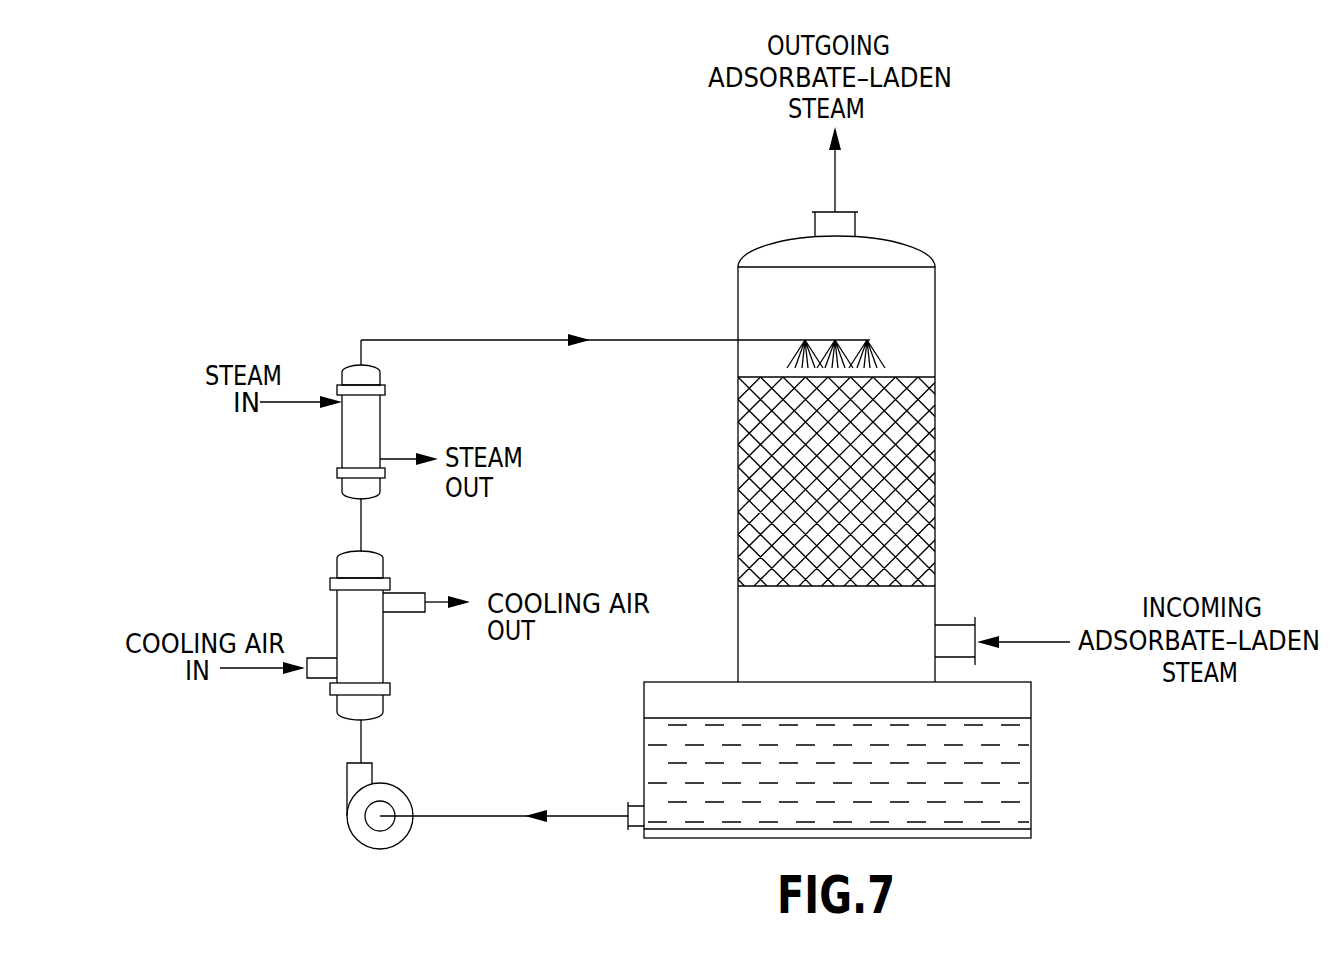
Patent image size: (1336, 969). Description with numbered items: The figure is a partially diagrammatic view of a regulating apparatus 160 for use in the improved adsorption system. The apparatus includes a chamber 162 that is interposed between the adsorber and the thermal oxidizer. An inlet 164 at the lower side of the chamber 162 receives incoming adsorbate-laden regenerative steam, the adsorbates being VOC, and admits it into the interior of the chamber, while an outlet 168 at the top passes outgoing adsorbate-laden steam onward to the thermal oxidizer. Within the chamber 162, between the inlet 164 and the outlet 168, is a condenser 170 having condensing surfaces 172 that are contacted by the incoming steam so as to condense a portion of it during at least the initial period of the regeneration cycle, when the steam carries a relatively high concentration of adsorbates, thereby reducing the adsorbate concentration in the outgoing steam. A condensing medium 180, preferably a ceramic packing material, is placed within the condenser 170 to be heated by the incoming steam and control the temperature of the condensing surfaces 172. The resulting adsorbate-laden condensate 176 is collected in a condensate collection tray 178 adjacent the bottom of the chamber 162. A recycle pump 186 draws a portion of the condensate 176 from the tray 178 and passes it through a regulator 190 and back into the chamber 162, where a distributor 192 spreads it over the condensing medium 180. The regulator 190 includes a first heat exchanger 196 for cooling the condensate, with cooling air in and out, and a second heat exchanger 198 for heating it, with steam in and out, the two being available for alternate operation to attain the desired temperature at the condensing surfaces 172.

The regulating apparatus 160 is at (935, 258).
The chamber 162 is at (938, 318).
The inlet 164 is at (977, 640).
The outlet 168 is at (838, 205).
The condenser 170 is at (737, 394).
The condensing surfaces 172 is at (752, 500).
The adsorbate-laden condensate 176 is at (843, 725).
The condensate collection tray 178 is at (703, 830).
The condensing medium 180 is at (917, 460).
The recycle pump 186 is at (380, 840).
The regulator 190 is at (345, 521).
The distributor 192 is at (623, 328).
The first heat exchanger 196 is at (377, 642).
The second heat exchanger 198 is at (381, 413).